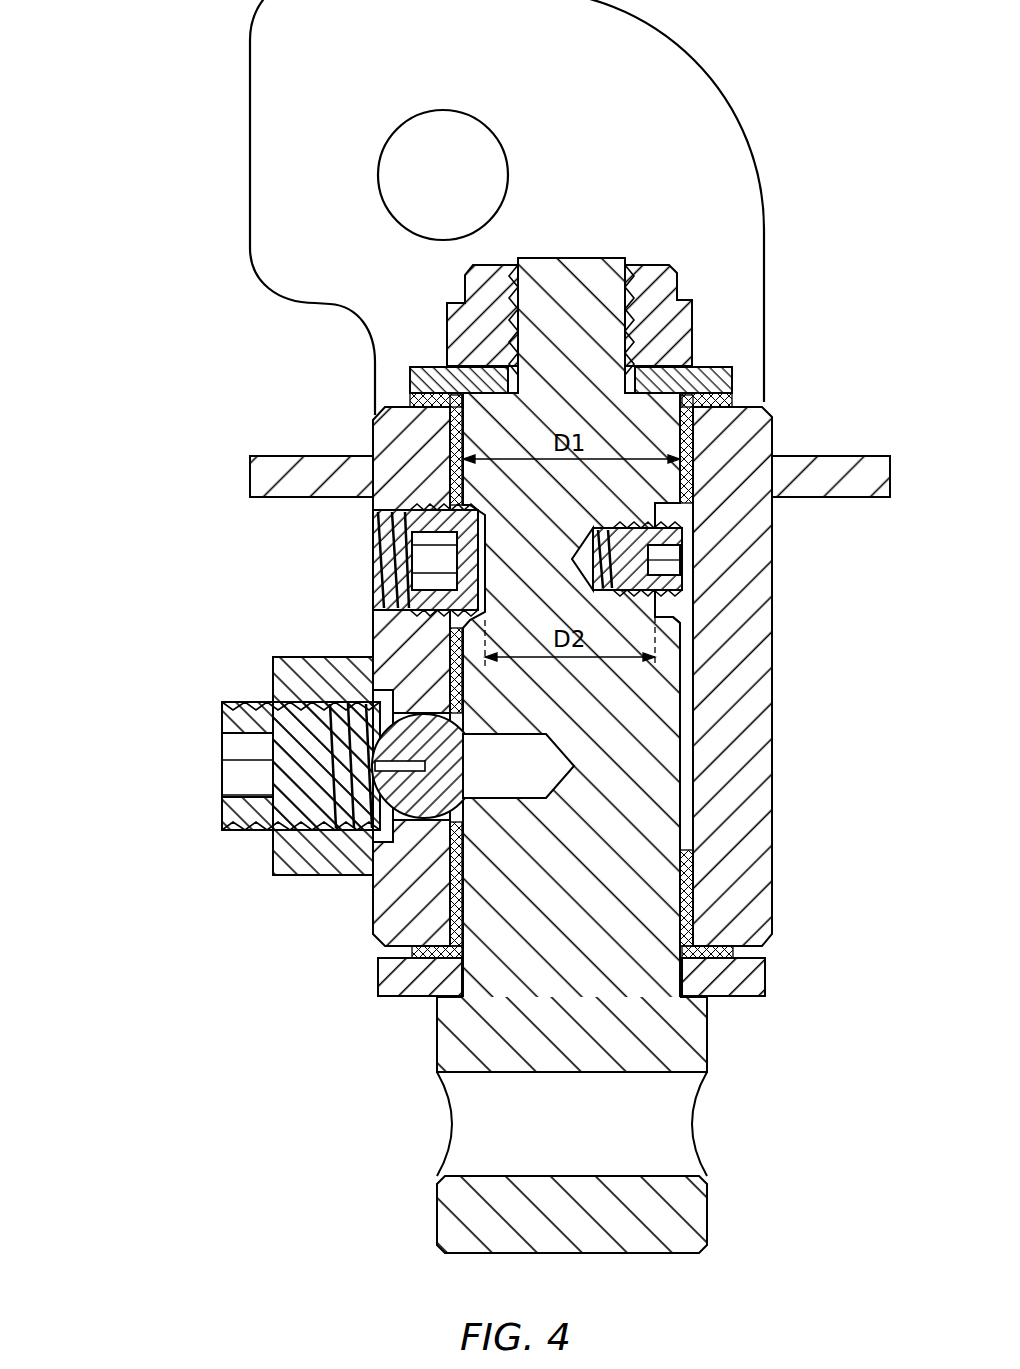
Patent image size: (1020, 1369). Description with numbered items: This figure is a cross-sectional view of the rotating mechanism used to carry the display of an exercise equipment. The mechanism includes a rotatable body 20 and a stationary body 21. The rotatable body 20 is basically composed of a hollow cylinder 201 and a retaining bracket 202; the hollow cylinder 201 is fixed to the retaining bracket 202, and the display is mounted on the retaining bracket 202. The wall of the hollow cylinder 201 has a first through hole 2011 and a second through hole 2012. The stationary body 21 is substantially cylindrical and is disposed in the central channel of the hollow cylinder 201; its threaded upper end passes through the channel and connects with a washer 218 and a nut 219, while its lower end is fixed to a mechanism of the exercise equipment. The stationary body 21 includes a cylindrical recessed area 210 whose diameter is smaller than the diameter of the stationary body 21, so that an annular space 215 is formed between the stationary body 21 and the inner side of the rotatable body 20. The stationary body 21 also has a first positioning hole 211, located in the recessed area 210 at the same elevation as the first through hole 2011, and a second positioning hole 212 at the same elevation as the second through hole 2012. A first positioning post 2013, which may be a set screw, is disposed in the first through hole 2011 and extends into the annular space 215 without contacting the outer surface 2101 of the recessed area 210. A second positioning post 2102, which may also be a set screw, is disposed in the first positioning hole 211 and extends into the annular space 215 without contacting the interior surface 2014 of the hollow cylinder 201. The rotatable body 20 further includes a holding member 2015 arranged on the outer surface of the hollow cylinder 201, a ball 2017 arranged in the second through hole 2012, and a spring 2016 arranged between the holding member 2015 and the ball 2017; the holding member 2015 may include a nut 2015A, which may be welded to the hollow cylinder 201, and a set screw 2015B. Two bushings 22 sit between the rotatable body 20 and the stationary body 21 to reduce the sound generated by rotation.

The rotatable body 20 is at (621, 755).
The stationary body 21 is at (710, 1050).
The bushings 22 is at (733, 403).
The hollow cylinder 201 is at (770, 779).
The retaining bracket 202 is at (738, 172).
The recessed area 210 is at (460, 465).
The first positioning hole 211 is at (688, 455).
The second positioning hole 212 is at (547, 797).
The annular space 215 is at (470, 622).
The washer 218 is at (690, 375).
The nut 219 is at (680, 302).
The first through hole 2011 is at (390, 505).
The second through hole 2012 is at (420, 822).
The first positioning post 2013 is at (430, 597).
The interior surface 2014 is at (697, 730).
The holding member 2015 is at (207, 766).
The nut 2015A is at (290, 670).
The set screw 2015B is at (250, 766).
The spring 2016 is at (400, 822).
The ball 2017 is at (470, 797).
The outer surface 2101 is at (655, 603).
The second positioning post 2102 is at (673, 537).